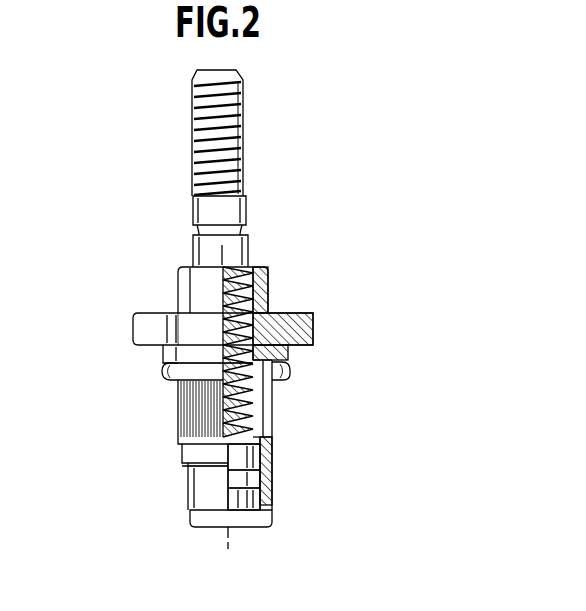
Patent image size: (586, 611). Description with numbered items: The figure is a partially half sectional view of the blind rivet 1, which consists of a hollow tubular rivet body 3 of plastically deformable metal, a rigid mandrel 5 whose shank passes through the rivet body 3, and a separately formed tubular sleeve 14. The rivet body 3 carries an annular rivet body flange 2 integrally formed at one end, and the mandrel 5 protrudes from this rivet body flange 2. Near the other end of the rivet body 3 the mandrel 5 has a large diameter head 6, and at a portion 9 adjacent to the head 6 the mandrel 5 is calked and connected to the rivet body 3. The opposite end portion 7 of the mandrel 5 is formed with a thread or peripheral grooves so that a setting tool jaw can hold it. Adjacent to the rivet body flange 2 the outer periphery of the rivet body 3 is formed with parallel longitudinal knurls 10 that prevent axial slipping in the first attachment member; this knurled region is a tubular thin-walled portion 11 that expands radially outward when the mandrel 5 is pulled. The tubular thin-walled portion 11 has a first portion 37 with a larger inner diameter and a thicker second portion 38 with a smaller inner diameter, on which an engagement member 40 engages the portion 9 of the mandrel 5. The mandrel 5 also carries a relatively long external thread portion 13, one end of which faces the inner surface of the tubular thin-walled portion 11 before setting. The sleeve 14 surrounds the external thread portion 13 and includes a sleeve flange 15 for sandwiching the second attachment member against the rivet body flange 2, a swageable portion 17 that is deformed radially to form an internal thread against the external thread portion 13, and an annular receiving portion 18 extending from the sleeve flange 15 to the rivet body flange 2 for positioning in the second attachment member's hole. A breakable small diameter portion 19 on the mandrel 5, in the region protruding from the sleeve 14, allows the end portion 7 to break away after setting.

The blind rivet 1 is at (86, 205).
The rivet body flange 2 is at (168, 380).
The rivet body 3 is at (166, 414).
The mandrel 5 is at (183, 247).
The head 6 is at (200, 520).
The end portion 7 is at (192, 104).
The portion 9 is at (272, 505).
The knurls 10 is at (181, 430).
The tubular thin-walled portion 11 is at (273, 420).
The external thread portion 13 is at (275, 297).
The sleeve 14 is at (67, 267).
The sleeve flange 15 is at (134, 325).
The swageable portion 17 is at (178, 287).
The receiving portion 18 is at (165, 354).
The breakable small diameter portion 19 is at (250, 237).
The first portion 37 is at (275, 403).
The second portion 38 is at (272, 459).
The engagement member 40 is at (272, 487).